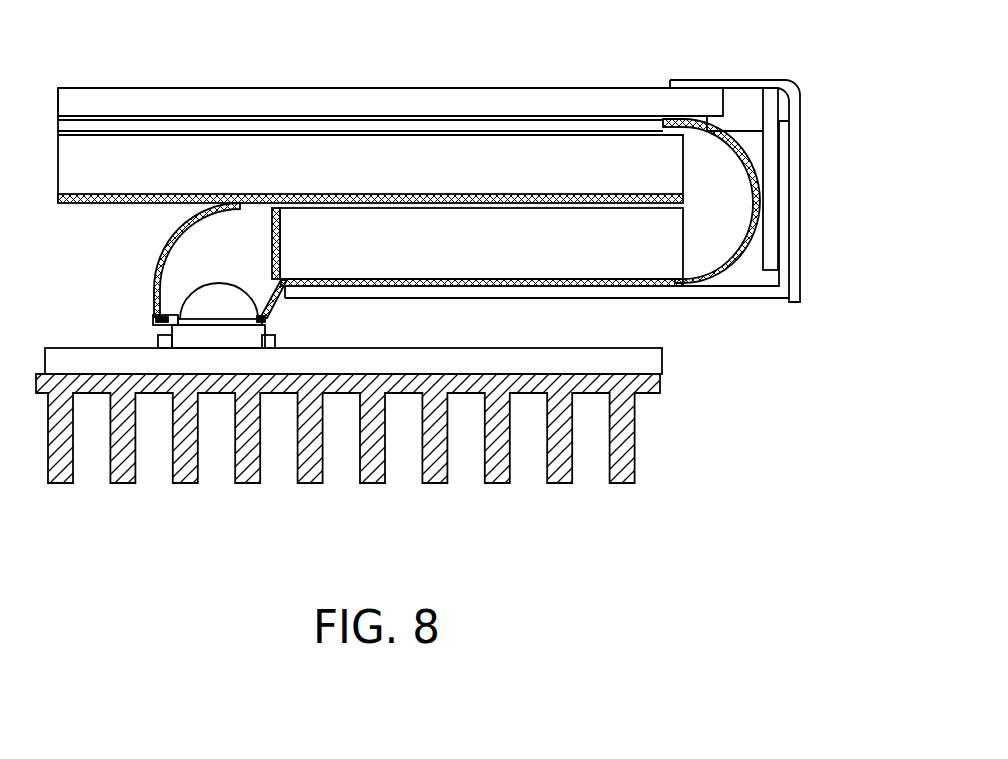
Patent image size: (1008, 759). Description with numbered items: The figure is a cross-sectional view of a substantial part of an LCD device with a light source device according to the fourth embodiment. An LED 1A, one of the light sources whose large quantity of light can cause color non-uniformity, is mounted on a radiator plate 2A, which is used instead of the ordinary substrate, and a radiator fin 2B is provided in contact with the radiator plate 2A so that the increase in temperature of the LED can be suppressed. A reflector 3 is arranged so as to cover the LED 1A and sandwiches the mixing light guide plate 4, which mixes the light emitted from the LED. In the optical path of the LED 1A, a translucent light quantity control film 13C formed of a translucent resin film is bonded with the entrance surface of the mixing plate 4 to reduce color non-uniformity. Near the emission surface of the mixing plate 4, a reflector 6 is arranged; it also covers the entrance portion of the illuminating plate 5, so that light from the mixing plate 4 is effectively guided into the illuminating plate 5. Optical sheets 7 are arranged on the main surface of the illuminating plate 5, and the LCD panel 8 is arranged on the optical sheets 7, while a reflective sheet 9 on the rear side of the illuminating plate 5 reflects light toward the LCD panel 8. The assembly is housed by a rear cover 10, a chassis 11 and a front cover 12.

The LED 1A is at (240, 337).
The radiator plate 2A is at (665, 355).
The radiator fin 2B is at (662, 385).
The reflector 3 is at (152, 308).
The mixing light guide plate 4 is at (487, 235).
The illuminating plate 5 is at (411, 160).
The reflector 6 is at (757, 233).
The optical sheets 7 is at (216, 124).
The LCD panel 8 is at (308, 100).
The reflective sheet 9 is at (577, 202).
The rear cover 10 is at (793, 269).
The chassis 11 is at (770, 181).
The front cover 12 is at (797, 105).
The translucent light quantity control film 13C is at (270, 248).